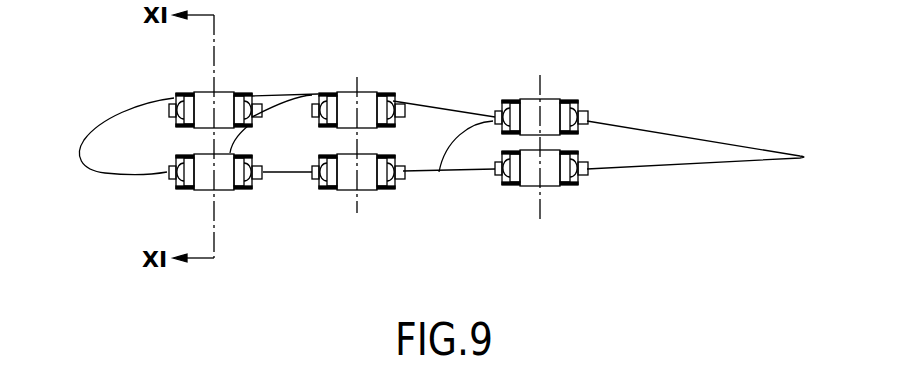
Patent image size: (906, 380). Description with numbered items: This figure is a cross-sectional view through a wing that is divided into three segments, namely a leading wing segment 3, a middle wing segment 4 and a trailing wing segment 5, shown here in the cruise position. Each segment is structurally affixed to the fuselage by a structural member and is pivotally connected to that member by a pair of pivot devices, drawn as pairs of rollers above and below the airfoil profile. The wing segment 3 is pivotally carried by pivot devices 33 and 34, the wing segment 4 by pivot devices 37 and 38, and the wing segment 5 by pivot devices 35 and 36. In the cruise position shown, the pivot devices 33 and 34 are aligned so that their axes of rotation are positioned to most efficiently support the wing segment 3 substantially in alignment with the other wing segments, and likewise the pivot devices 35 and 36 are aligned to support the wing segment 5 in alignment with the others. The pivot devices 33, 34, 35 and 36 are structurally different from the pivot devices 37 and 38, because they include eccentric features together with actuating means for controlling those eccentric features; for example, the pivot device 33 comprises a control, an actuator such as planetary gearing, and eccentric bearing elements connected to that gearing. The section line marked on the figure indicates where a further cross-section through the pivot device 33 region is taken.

The wing segment 3 is at (93, 140).
The wing segment 4 is at (413, 123).
The wing segment 5 is at (682, 147).
The pivot device 33 is at (178, 93).
The pivot device 34 is at (173, 188).
The pivot device 35 is at (572, 100).
The pivot device 36 is at (577, 187).
The pivot device 37 is at (385, 92).
The pivot device 38 is at (393, 192).